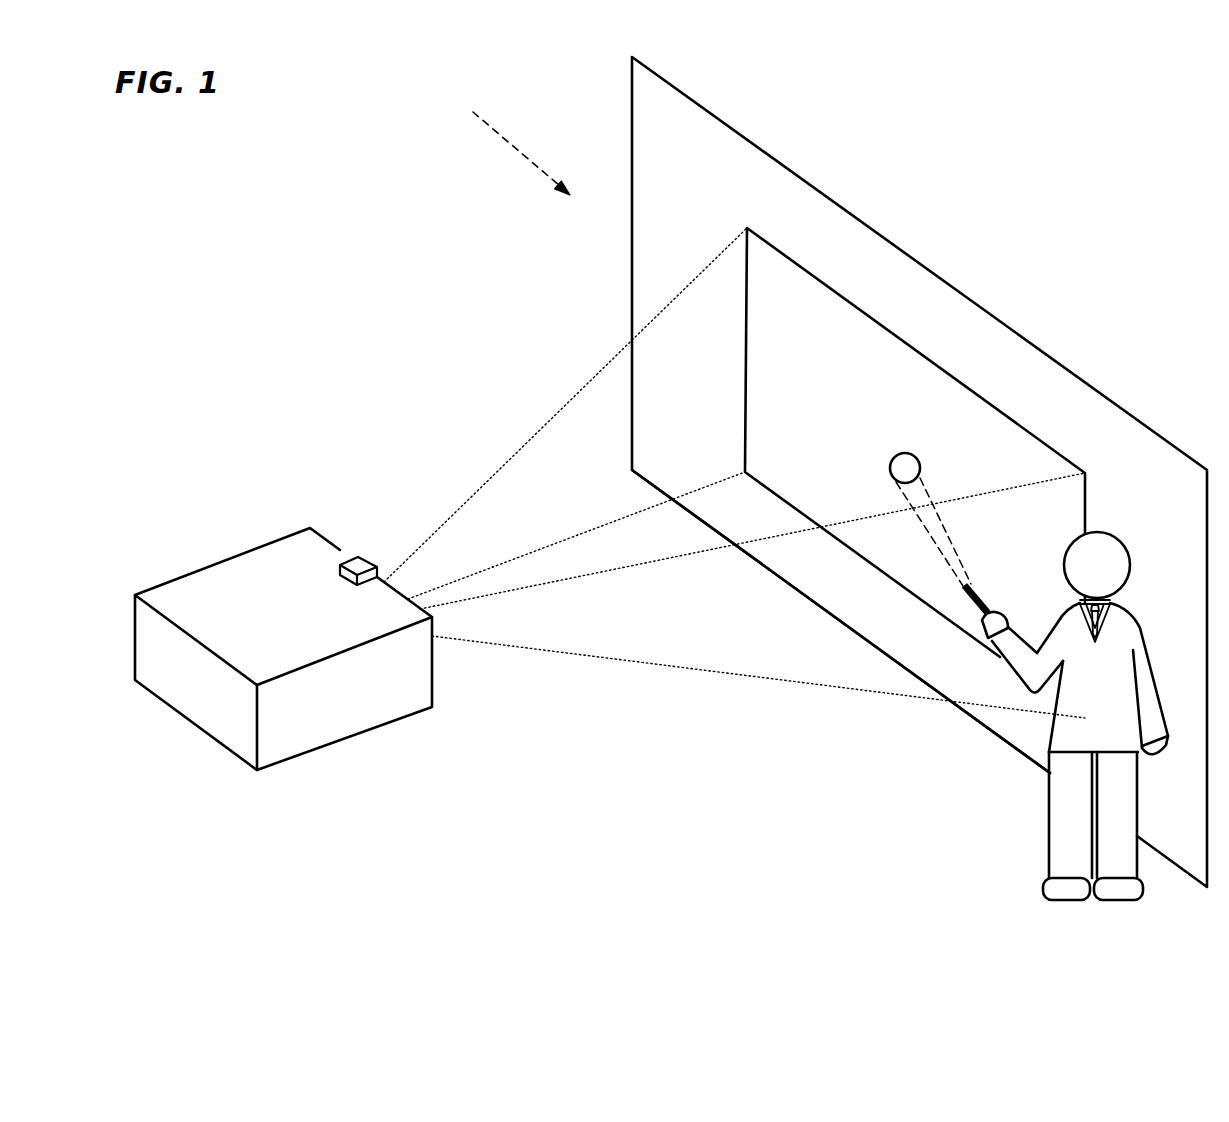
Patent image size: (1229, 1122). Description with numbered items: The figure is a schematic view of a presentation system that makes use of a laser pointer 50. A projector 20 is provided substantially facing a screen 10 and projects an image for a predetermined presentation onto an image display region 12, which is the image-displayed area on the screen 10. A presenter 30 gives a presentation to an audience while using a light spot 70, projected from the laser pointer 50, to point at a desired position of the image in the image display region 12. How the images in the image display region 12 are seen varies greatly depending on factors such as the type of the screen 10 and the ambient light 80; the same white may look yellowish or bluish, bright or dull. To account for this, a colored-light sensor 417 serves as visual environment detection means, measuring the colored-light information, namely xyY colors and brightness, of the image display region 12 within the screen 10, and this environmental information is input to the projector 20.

The screen 10 is at (958, 291).
The image display region 12 is at (958, 381).
The projector 20 is at (410, 695).
The colored-light sensor 417 is at (361, 562).
The presenter 30 is at (1104, 533).
The laser pointer 50 is at (985, 606).
The light spot 70 is at (920, 461).
The ambient light 80 is at (491, 127).